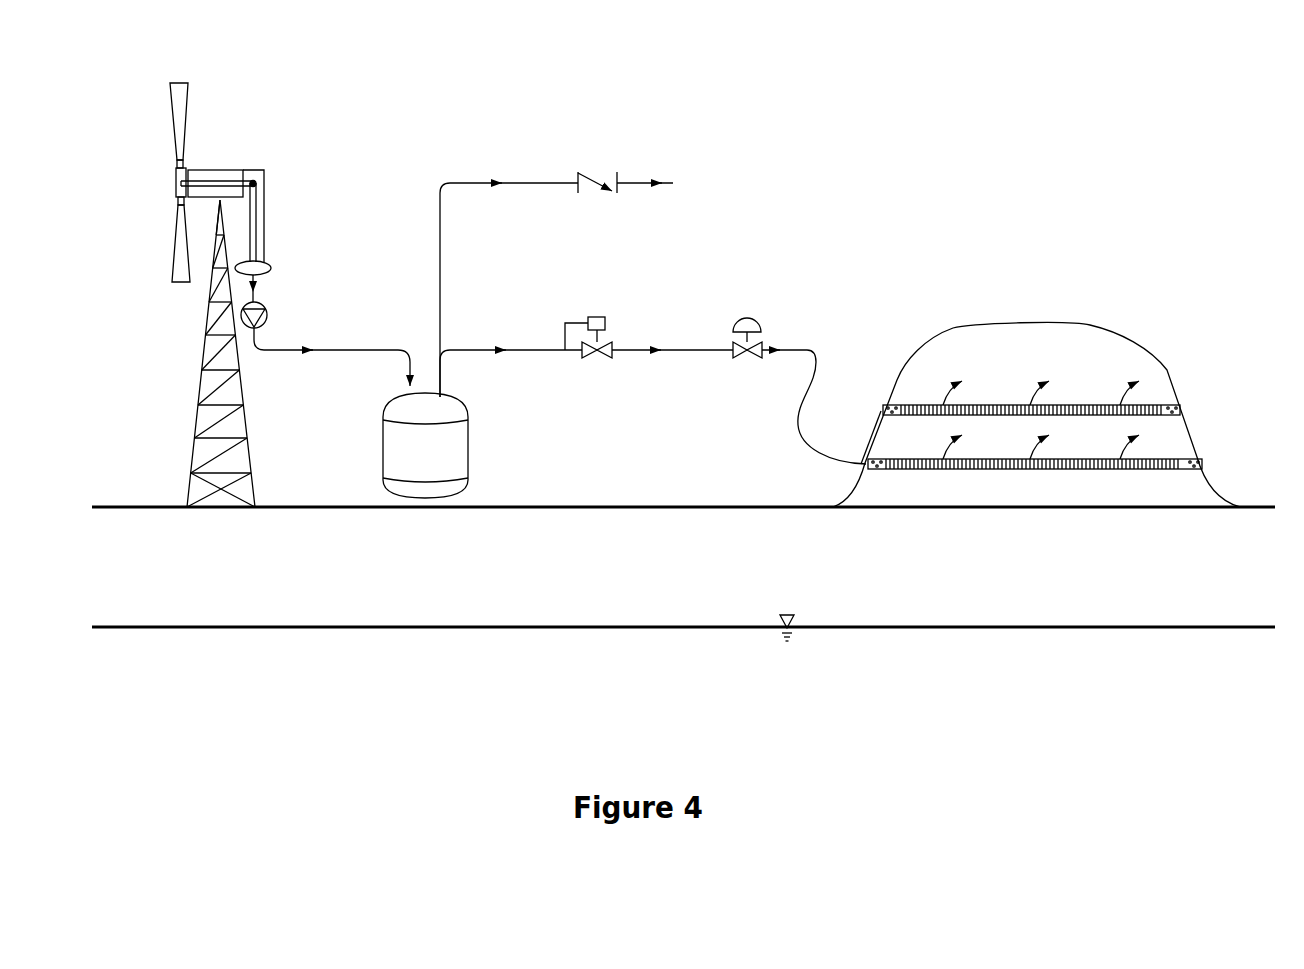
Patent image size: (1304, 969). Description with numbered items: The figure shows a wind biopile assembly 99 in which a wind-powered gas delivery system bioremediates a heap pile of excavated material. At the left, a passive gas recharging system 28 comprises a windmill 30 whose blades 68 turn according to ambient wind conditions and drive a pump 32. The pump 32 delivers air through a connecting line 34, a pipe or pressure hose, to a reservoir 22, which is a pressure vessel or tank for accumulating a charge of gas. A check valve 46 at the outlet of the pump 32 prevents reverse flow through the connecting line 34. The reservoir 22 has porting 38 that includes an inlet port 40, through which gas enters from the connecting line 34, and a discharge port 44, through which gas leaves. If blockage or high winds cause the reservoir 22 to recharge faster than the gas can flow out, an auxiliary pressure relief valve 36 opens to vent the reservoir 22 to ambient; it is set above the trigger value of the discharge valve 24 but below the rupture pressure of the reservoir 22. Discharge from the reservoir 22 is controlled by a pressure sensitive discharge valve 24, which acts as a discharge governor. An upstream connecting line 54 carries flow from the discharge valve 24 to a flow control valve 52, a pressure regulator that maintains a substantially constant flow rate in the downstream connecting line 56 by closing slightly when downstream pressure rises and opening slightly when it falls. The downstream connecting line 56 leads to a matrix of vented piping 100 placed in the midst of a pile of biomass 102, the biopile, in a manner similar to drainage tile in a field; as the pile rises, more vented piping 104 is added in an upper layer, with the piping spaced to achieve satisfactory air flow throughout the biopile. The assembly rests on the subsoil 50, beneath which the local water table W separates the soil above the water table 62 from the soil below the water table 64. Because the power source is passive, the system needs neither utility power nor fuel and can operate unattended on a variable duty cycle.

The reservoir 22 is at (471, 462).
The pressure sensitive discharge valve 24 is at (597, 311).
The passive gas recharging system 28 is at (205, 268).
The windmill 30 is at (228, 167).
The pump 32 is at (268, 261).
The connecting line 34 is at (319, 356).
The auxiliary pressure relief valve 36 is at (600, 164).
The porting 38 is at (425, 344).
The inlet port 40 is at (404, 398).
The discharge port 44 is at (446, 398).
The check valve 46 is at (271, 313).
The subsoil 50 is at (146, 536).
The flow control valve 52 is at (748, 317).
The upstream connecting line 54 is at (688, 355).
The downstream connecting line 56 is at (801, 346).
The soil above water table 62 is at (491, 557).
The soil below water table 64 is at (419, 673).
The blades 68 is at (169, 133).
The wind biopile assembly 99 is at (628, 259).
The vented piping 100 is at (865, 466).
The pile of biomass 102 is at (1051, 321).
The vented piping 104 is at (881, 404).
The water table W is at (305, 622).